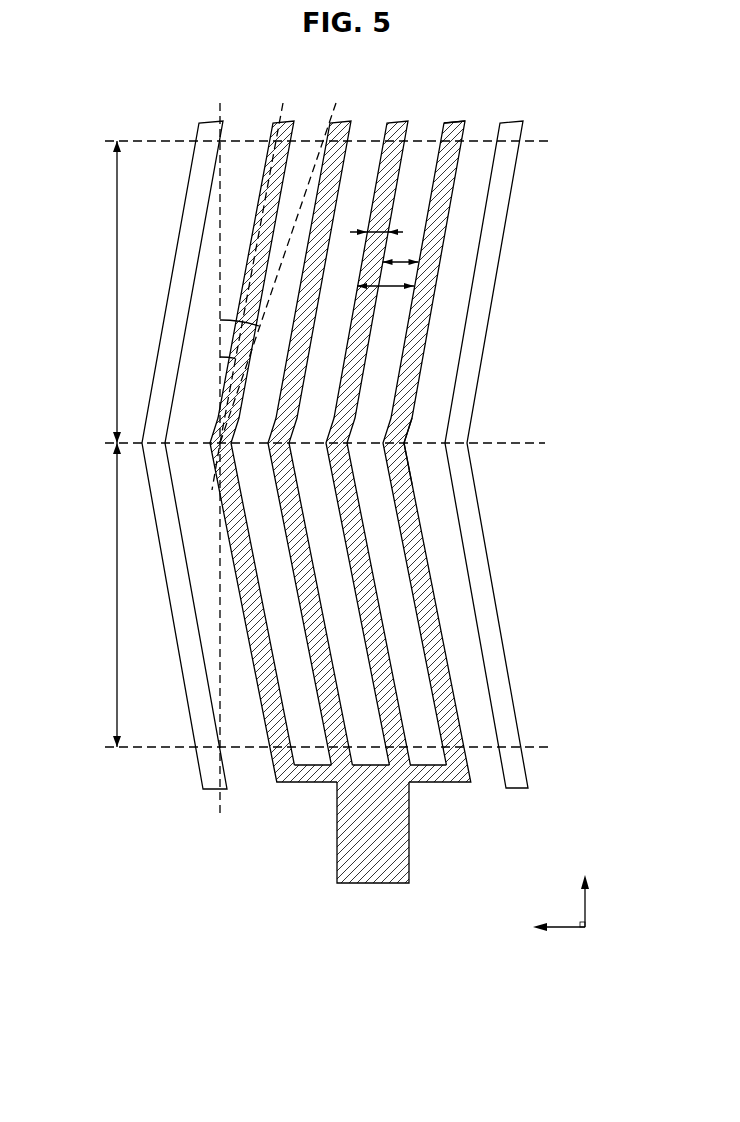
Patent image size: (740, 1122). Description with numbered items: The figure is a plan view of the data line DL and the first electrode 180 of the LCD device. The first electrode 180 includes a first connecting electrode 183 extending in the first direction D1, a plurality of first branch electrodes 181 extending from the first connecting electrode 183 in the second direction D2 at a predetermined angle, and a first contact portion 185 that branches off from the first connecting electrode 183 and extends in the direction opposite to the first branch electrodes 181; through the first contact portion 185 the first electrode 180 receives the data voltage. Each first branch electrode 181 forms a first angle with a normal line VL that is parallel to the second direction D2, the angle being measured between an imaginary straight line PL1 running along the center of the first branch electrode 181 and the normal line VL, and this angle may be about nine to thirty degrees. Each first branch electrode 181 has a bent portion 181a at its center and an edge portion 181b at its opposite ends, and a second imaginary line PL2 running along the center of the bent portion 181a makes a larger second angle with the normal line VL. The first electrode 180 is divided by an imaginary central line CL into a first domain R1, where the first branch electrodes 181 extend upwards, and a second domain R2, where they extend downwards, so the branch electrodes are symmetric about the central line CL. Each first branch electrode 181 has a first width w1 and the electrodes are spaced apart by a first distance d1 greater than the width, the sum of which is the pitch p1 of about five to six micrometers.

The first electrode 180 is at (414, 481).
The first branch electrodes 181 is at (443, 700).
The bent portion 181a is at (392, 430).
The edge portion 181b is at (452, 130).
The first connecting electrode 183 is at (444, 776).
The first contact portion 185 is at (410, 824).
The data line DL is at (160, 480).
The normal line VL is at (220, 449).
The imaginary straight line PL1 is at (255, 287).
The imaginary straight line PL2 is at (285, 264).
The imaginary central line CL is at (337, 444).
The first domain R1 is at (106, 292).
The second domain R2 is at (106, 595).
The first width w1 is at (376, 225).
The first distance d1 is at (401, 255).
The pitch p1 is at (385, 280).
The first direction D1 is at (549, 928).
The second direction D2 is at (587, 892).